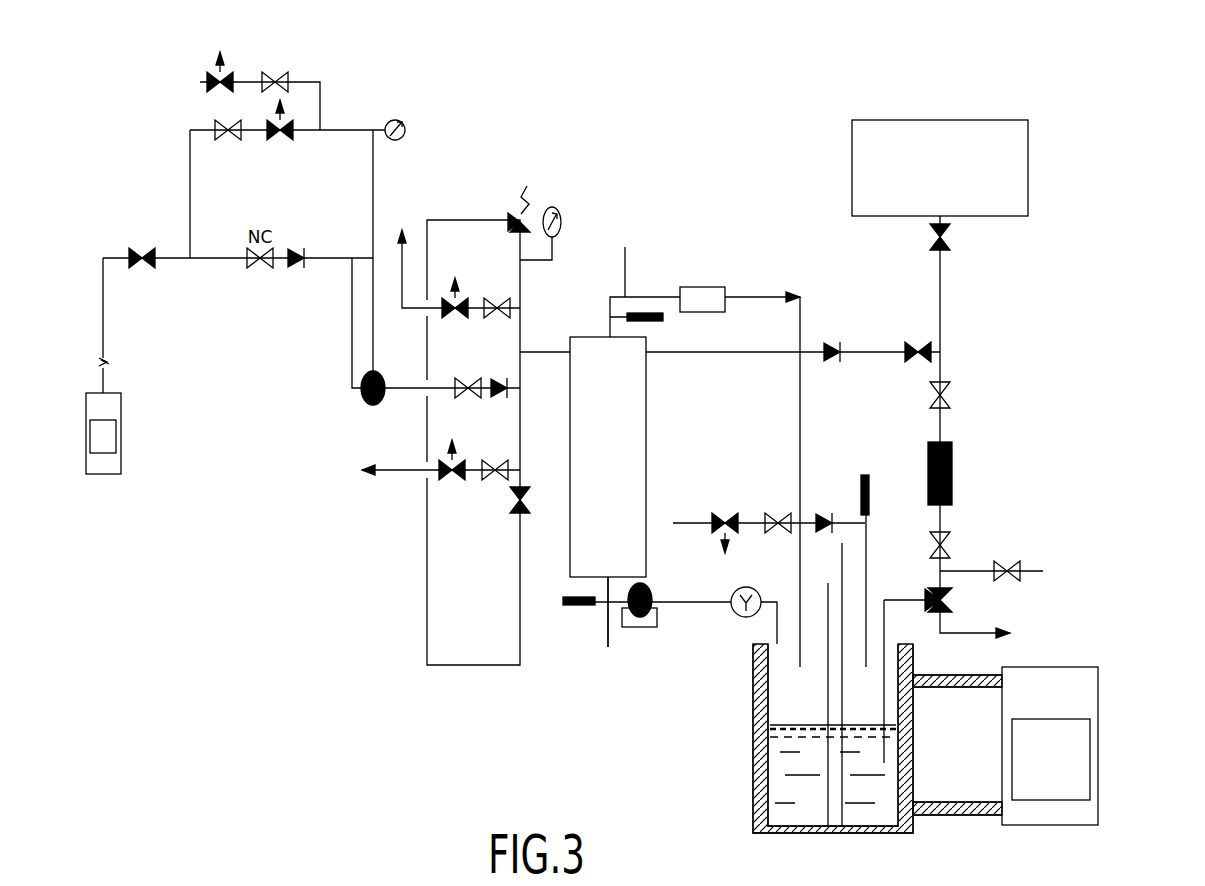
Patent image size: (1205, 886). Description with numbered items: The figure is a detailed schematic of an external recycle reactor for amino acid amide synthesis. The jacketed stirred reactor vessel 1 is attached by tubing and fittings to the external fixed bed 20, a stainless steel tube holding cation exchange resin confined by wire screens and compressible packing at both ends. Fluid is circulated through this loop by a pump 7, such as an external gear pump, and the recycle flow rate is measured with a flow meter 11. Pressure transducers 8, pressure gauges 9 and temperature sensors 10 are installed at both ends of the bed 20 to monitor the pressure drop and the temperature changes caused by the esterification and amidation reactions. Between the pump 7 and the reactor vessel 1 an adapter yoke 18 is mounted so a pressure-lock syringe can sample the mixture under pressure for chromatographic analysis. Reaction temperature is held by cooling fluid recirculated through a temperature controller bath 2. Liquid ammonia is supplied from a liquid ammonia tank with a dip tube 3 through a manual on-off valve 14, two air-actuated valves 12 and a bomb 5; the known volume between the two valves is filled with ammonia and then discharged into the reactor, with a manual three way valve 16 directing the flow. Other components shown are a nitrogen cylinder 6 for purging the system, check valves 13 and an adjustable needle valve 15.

The reactor vessel 1 is at (752, 790).
The temperature controller bath 2 is at (1098, 748).
The liquid ammonia tank with a dip tube 3 is at (1028, 150).
The bomb 5 is at (952, 465).
The nitrogen cylinder 6 is at (121, 462).
The pump 7 is at (648, 590).
The pressure transducer 8 is at (575, 608).
The pressure gauge 9 is at (402, 122).
The temperature sensor 10 is at (608, 647).
The flow meter 11 is at (700, 287).
The air-actuated valve 12 is at (286, 78).
The check valve 13 is at (298, 268).
The manual on-off valve 14 is at (138, 250).
The adjustable needle valve 15 is at (215, 78).
The manual three way valve 16 is at (952, 610).
The adapter yoke 18 is at (740, 617).
The external fixed bed 20 is at (646, 416).